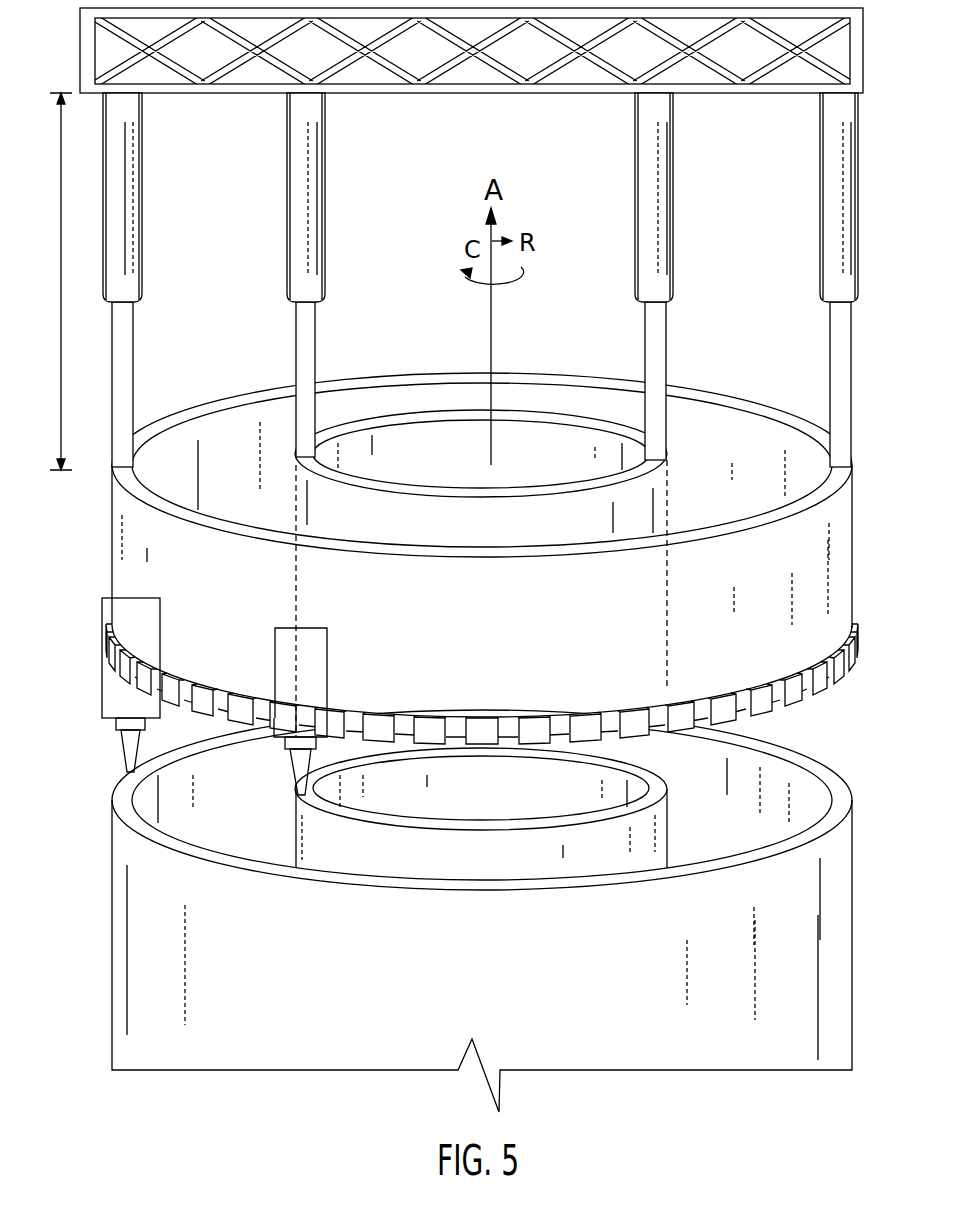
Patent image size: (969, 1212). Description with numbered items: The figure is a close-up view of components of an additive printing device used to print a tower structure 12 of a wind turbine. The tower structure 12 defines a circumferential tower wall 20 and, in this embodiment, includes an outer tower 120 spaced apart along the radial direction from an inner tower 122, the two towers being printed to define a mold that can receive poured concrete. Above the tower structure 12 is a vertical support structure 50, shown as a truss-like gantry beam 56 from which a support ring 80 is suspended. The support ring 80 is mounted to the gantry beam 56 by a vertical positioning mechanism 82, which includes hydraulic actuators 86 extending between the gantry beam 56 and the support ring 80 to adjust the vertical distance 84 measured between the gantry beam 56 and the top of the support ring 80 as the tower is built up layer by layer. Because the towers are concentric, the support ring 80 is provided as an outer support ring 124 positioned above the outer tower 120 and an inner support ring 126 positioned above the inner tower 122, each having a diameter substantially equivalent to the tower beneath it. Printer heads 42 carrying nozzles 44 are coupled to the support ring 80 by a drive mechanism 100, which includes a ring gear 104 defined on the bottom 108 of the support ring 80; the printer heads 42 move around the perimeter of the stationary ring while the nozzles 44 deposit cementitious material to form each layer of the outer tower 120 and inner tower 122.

The tower structure 12 is at (490, 911).
The circumferential tower wall 20 is at (493, 1015).
The printer head 42 is at (99, 682).
The nozzle 44 is at (120, 751).
The vertical support structure 50 is at (471, 237).
The gantry beam 56 is at (545, 94).
The support ring 80 is at (511, 595).
The vertical positioning mechanism 82 is at (147, 250).
The vertical distance 84 is at (61, 256).
The hydraulic actuator 86 is at (305, 258).
The drive mechanism 100 is at (482, 706).
The ring gear 104 is at (482, 721).
The bottom of support ring 108 is at (523, 742).
The outer tower 120 is at (832, 925).
The inner tower 122 is at (663, 834).
The outer support ring 124 is at (843, 577).
The inner support ring 126 is at (637, 516).